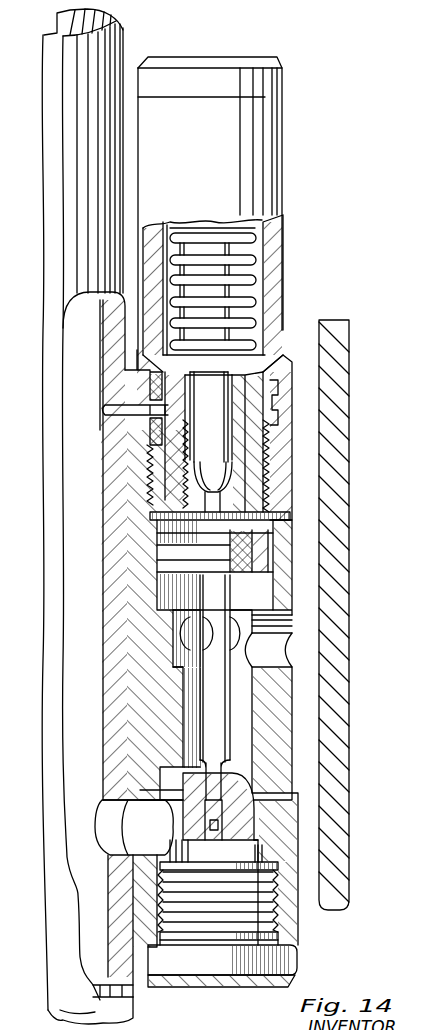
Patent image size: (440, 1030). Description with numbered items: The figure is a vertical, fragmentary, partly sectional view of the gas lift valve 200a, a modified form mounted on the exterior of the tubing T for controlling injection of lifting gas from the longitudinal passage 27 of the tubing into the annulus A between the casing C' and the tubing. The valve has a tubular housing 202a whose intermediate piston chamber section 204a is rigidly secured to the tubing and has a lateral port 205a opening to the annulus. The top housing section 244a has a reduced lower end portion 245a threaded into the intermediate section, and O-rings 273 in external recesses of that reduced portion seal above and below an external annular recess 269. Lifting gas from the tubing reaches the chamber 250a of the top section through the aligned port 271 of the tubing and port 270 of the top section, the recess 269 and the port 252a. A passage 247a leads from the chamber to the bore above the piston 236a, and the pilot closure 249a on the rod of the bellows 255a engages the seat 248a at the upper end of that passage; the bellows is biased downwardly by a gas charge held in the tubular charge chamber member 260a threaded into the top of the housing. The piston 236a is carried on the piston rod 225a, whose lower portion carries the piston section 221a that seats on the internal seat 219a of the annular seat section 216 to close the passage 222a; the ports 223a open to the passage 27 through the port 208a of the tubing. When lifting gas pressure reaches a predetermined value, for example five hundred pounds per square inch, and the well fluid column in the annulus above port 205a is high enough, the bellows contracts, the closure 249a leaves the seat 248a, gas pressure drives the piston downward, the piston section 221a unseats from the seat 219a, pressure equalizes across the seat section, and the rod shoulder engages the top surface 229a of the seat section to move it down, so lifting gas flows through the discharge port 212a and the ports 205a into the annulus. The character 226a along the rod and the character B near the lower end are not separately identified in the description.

The tubing T is at (126, 42).
The longitudinal passage of the tubing 27 is at (60, 337).
The tubular charge chamber member 260a is at (284, 82).
The tubular housing 202a is at (284, 212).
The bellows 255a is at (258, 252).
The gas lift valve 200a is at (312, 270).
The top section of the housing 244a is at (283, 297).
The O-rings 273 is at (284, 370).
The annulus A is at (313, 342).
The casing C' is at (369, 345).
The annular recess of the top housing section 269 is at (292, 390).
The port of the tubing 271 is at (100, 405).
The port of the top housing section 270 is at (130, 412).
The port of the top housing section 252a is at (165, 423).
The chamber of the top housing section 250a is at (265, 465).
The auxiliary or pilot closure 249a is at (252, 478).
The reduced lower end portion of the top housing section 245a is at (240, 505).
The seat of the top housing section 248a is at (225, 512).
The passage of the top housing section 247a is at (160, 498).
The piston 236a is at (270, 538).
The intermediate piston chamber section 204a is at (265, 562).
The piston rod 225a is at (240, 598).
The lateral port of the intermediate housing section 205a is at (280, 628).
The discharge passage or port 212a is at (243, 707).
The valve rod 226a is at (225, 752).
The passage of the seat section 222a is at (280, 775).
The annular internal seat 219a is at (268, 790).
The piston section of the closure 221a is at (292, 830).
The annular seat section 216 is at (302, 910).
The top surface of the annular seat section 229a is at (190, 760).
The lateral port of the tubing 208a is at (105, 810).
The ports 223a is at (138, 858).
The threaded stud B is at (218, 903).